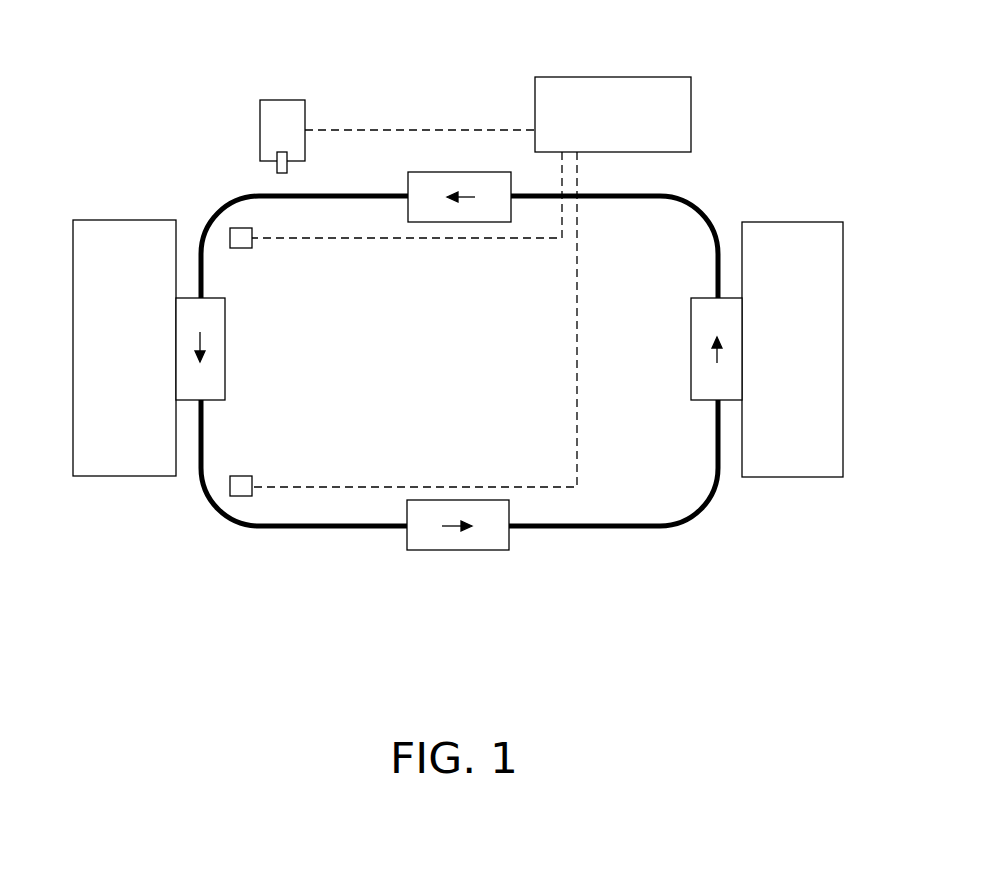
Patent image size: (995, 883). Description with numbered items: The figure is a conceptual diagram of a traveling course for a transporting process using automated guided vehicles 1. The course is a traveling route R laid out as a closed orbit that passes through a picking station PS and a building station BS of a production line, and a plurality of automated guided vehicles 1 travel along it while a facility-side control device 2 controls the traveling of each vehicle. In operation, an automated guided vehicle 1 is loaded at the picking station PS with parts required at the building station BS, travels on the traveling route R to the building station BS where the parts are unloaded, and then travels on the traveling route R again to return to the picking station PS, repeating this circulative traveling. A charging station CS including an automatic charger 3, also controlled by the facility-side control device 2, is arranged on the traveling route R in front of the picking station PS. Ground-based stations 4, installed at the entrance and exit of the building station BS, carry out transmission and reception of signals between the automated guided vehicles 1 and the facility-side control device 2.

The automated guided vehicle 1 is at (433, 190).
The facility-side control device 2 is at (643, 88).
The automatic charger 3 is at (283, 118).
The ground-based station 4 is at (241, 243).
The traveling route R is at (598, 523).
The charging station CS is at (229, 163).
The building station BS is at (126, 212).
The picking station PS is at (796, 212).